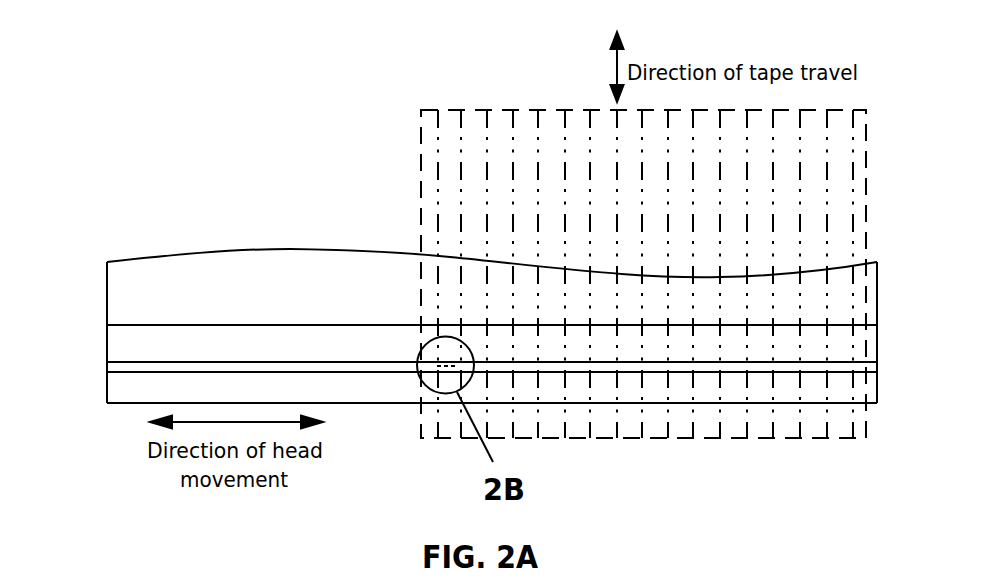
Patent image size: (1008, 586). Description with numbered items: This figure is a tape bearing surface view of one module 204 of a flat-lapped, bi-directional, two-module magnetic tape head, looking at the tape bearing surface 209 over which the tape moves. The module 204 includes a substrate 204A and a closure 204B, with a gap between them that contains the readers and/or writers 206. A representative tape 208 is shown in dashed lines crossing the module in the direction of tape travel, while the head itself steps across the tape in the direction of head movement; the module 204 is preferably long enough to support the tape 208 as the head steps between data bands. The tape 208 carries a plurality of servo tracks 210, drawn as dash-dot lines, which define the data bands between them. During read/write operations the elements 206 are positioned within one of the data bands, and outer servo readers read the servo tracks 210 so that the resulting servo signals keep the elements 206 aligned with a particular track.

The module 204 is at (441, 283).
The substrate 204A is at (255, 250).
The closure 204B is at (107, 388).
The readers and/or writers 206 is at (405, 365).
The tape 208 is at (420, 113).
The tape bearing surface 209 is at (316, 347).
The servo tracks 210 is at (540, 203).